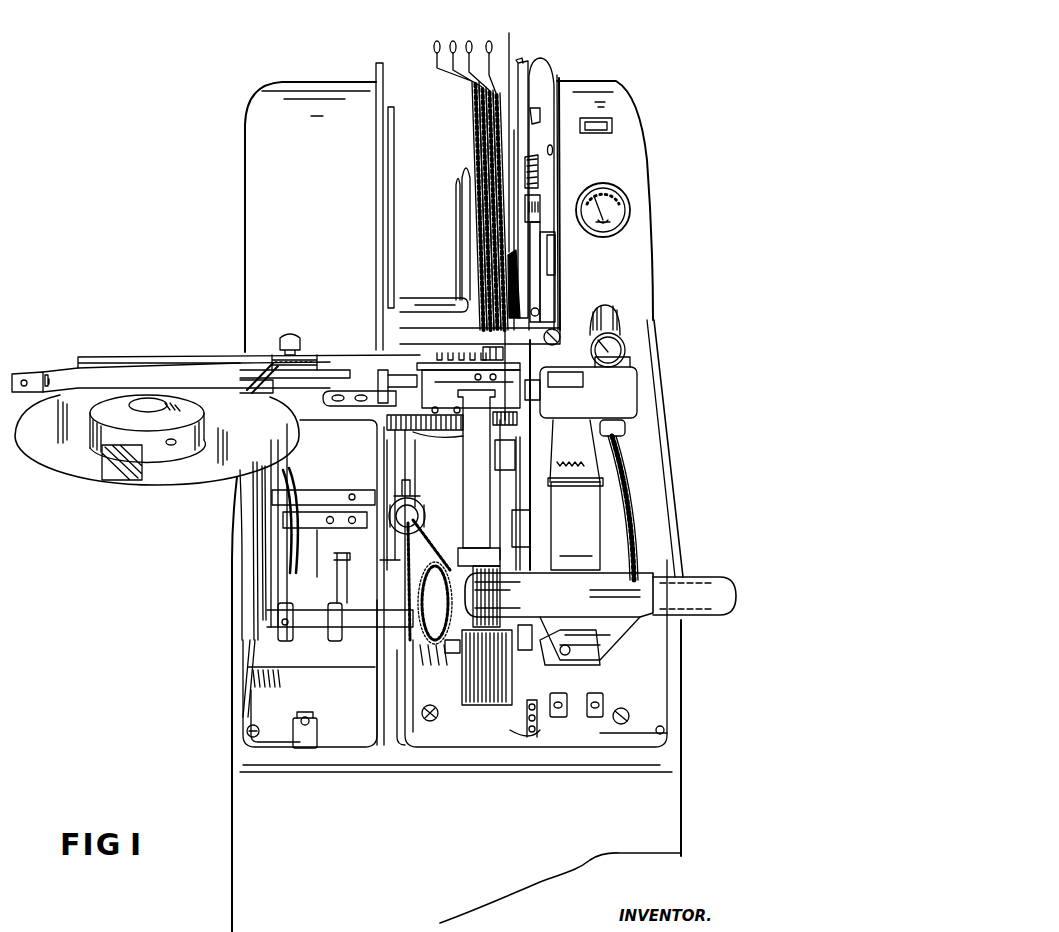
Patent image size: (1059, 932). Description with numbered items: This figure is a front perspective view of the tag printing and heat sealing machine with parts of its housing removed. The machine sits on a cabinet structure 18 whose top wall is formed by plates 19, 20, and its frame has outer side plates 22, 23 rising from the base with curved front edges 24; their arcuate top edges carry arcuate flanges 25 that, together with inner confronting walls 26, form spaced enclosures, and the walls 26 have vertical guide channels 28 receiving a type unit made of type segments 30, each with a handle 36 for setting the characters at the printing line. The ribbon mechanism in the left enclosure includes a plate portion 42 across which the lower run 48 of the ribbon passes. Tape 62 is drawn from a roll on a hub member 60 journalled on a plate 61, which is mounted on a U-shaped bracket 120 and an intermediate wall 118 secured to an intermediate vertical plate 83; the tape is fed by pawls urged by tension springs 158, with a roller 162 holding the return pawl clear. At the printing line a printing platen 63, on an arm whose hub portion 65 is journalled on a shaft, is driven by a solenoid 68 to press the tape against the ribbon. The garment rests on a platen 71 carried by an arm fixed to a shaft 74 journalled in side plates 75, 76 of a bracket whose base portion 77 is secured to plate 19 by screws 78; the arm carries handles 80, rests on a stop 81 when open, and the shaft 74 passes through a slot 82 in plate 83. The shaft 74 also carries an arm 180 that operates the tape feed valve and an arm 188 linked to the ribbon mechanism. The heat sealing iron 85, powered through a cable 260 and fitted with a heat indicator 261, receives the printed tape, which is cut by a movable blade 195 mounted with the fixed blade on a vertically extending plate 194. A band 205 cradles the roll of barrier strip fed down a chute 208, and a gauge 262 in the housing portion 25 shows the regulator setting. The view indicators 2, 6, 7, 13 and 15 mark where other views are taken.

The section line 2- 2 is at (509, 33).
The section line 6- 6 is at (455, 164).
The section line 7- 7 is at (418, 345).
The section line 13- 13 is at (632, 310).
The section line 15- 15 is at (262, 330).
The cabinet structure 18 is at (456, 704).
The top wall plate 19 is at (413, 750).
The top wall plate 20 is at (310, 673).
The outer side plate 22 is at (666, 549).
The outer side plate 23 is at (235, 585).
The front edges 24 is at (230, 502).
The arcuate flanges 25 is at (449, 216).
The inner confronting walls 26 is at (382, 101).
The guide channels 28 is at (389, 143).
The type segments 30 is at (473, 112).
The handle 36 is at (457, 38).
The plate portion 42 is at (442, 435).
The lower run of the ribbon 48 is at (464, 426).
The hub member 60 is at (160, 448).
The plate 61 is at (68, 470).
The tape 62 is at (36, 372).
The printing platen 63 is at (468, 388).
The hub portion 65 is at (448, 513).
The solenoid 68 is at (478, 613).
The platen 71 is at (575, 495).
The shaft 74 is at (307, 620).
The side plate 75 is at (590, 636).
The side plate 76 is at (462, 635).
The base portion 77 is at (532, 588).
The screws 78 is at (427, 709).
The handles 80 is at (694, 596).
The stop 81 is at (560, 708).
The slot 82 is at (380, 695).
The intermediate vertical plate 83 is at (406, 582).
The heat sealing iron 85 is at (588, 361).
The intermediate wall 118 is at (375, 470).
The U-shaped bracket 120 is at (346, 407).
The tension springs 158 is at (302, 348).
The roller 162 is at (383, 370).
The arm 180 is at (311, 588).
The arm 188 is at (278, 597).
The vertically extending plate 194 is at (559, 645).
The movable blade 195 is at (527, 402).
The metallic band 205 is at (528, 63).
The chute 208 is at (537, 218).
The cable 260 is at (634, 508).
The heat indicator 261 is at (622, 349).
The gauge 262 is at (624, 208).